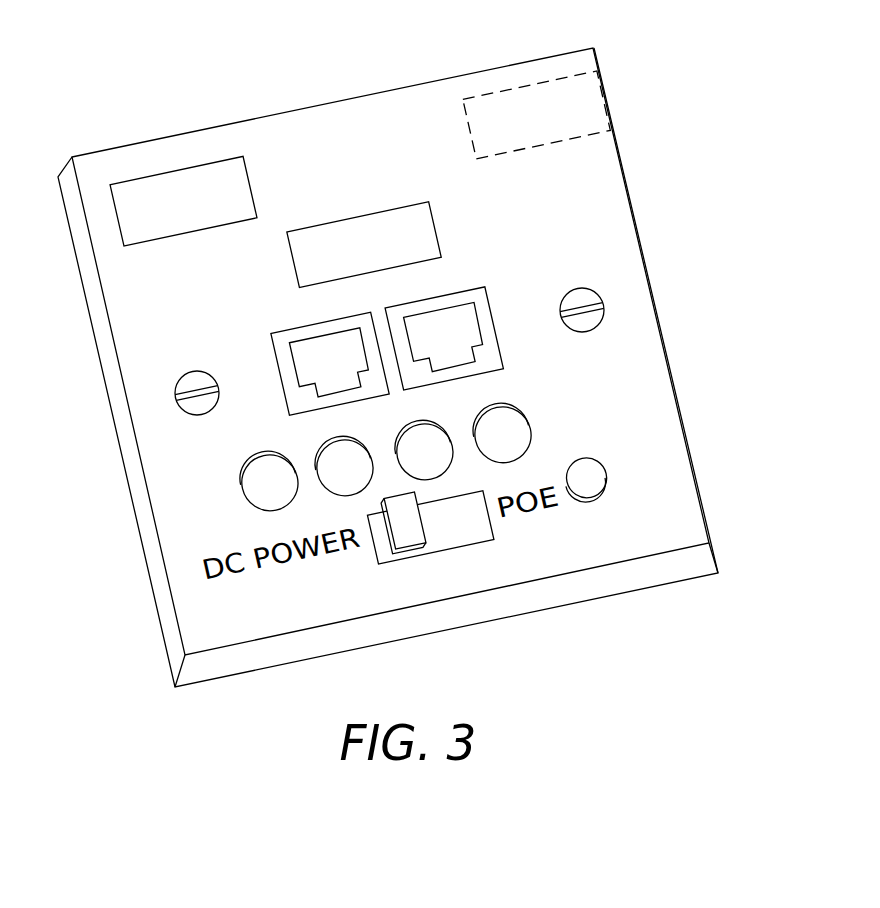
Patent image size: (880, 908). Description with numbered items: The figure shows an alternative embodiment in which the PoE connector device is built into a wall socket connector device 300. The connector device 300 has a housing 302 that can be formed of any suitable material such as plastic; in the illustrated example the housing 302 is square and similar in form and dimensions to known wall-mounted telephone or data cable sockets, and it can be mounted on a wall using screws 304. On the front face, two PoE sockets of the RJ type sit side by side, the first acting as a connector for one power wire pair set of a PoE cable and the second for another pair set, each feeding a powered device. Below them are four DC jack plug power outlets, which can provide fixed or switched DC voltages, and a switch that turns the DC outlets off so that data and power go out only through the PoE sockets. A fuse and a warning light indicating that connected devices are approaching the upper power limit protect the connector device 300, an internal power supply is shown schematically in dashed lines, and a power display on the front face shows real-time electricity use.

The wall socket connector device 300 is at (284, 76).
The housing 302 is at (120, 163).
The screws 304 is at (175, 395).